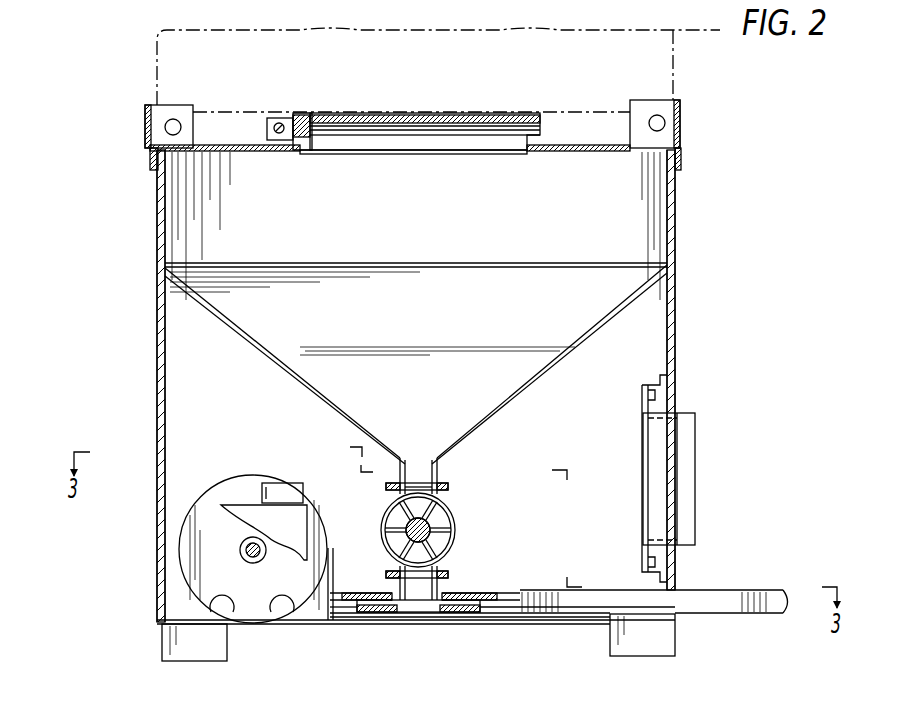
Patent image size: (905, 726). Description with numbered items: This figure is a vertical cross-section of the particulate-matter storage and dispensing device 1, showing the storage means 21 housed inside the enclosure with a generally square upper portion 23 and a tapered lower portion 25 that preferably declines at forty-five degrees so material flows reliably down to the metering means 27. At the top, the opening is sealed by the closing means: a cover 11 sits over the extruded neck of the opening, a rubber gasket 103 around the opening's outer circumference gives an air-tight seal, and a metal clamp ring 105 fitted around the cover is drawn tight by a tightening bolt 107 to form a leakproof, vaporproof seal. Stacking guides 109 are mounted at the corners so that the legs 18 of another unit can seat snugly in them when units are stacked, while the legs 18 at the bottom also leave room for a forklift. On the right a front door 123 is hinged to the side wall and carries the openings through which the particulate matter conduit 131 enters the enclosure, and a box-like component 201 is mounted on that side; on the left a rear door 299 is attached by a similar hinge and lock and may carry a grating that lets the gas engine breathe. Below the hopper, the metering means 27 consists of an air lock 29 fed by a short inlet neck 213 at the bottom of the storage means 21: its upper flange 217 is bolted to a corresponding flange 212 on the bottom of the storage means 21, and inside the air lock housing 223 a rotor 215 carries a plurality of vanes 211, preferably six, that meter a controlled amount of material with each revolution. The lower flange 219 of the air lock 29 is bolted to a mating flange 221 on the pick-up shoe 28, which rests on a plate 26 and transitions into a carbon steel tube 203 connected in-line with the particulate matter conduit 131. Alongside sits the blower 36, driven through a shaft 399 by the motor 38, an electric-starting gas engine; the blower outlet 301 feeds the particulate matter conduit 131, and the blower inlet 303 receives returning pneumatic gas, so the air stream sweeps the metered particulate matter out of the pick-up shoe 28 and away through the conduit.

The device 1 is at (128, 51).
The cover 11 is at (440, 118).
The legs 18 is at (164, 649).
The storage means 21 is at (637, 262).
The upper portion 23 is at (573, 167).
The tapered lower portion 25 is at (590, 298).
The base plate 26 is at (422, 581).
The metering means 27 is at (378, 553).
The pick-up shoe 28 is at (412, 588).
The air lock 29 is at (462, 522).
The blower 36 is at (193, 538).
The motor 38 is at (247, 512).
The rubber gasket 103 is at (520, 129).
The clamp ring 105 is at (540, 127).
The tightening bolt 107 is at (279, 143).
The stacking guide 109 is at (147, 138).
The front door 123 is at (676, 361).
The particulate matter conduit 131 is at (745, 614).
The control box 201 is at (672, 486).
The carbon steel tube 203 is at (382, 599).
The vanes 211 is at (388, 514).
The flange 212 is at (443, 473).
The inlet tube 213 is at (417, 466).
The rotor 215 is at (428, 535).
The upper flange 217 is at (450, 486).
The lower flange 219 is at (455, 574).
The flange 221 is at (470, 604).
The air lock housing 223 is at (453, 520).
The rear door 299 is at (157, 318).
The outlet 301 is at (256, 628).
The blower inlet 303 is at (186, 601).
The shaft 399 is at (240, 553).